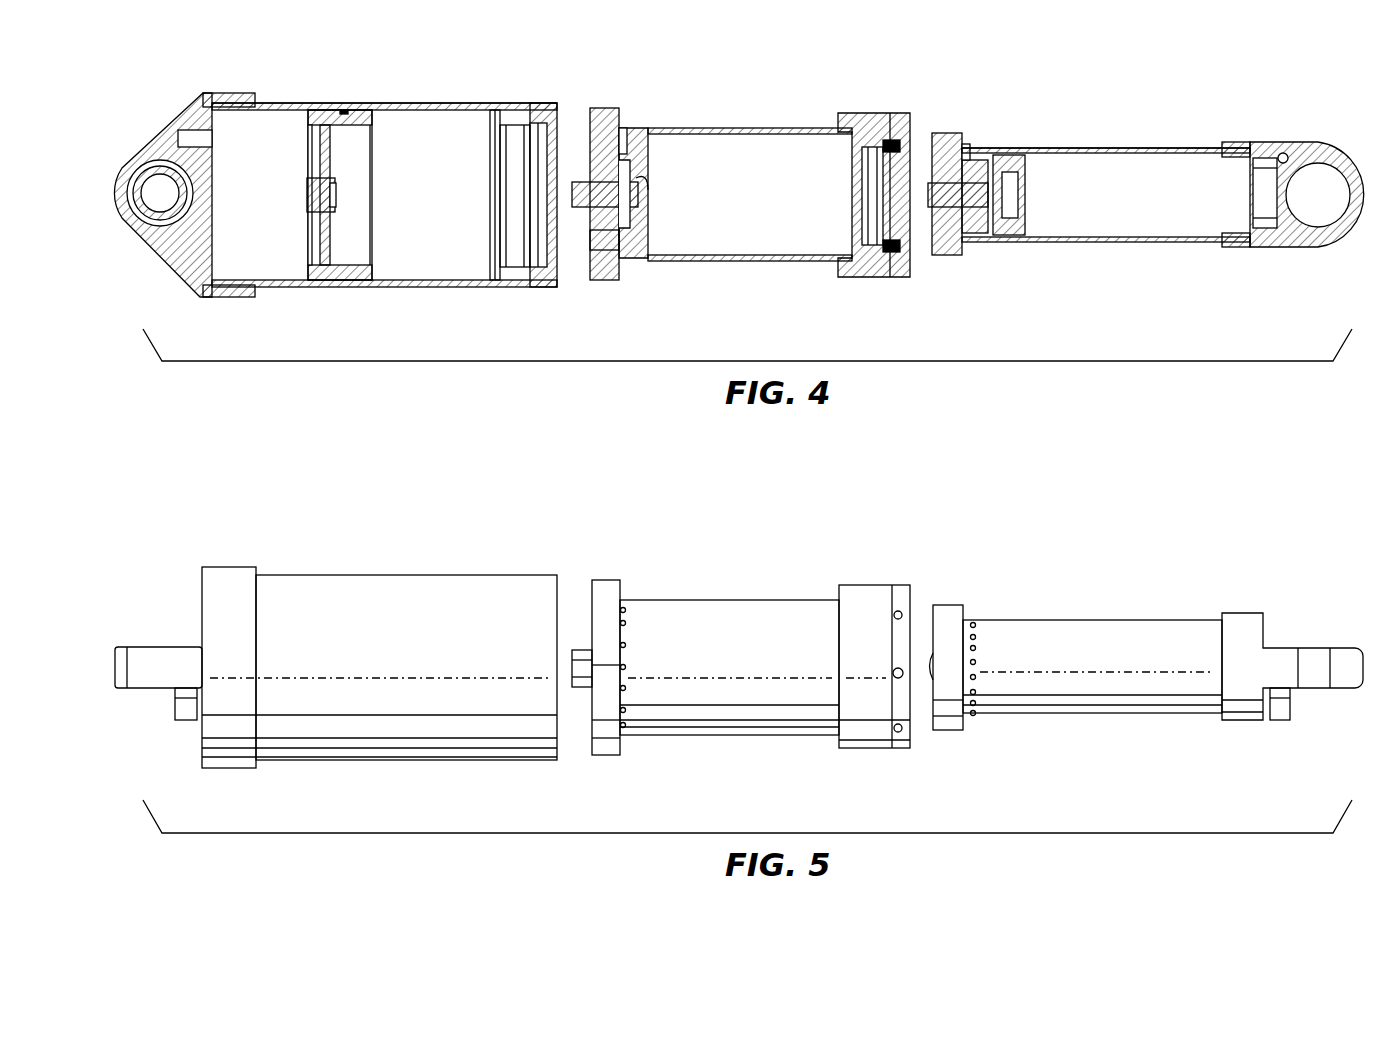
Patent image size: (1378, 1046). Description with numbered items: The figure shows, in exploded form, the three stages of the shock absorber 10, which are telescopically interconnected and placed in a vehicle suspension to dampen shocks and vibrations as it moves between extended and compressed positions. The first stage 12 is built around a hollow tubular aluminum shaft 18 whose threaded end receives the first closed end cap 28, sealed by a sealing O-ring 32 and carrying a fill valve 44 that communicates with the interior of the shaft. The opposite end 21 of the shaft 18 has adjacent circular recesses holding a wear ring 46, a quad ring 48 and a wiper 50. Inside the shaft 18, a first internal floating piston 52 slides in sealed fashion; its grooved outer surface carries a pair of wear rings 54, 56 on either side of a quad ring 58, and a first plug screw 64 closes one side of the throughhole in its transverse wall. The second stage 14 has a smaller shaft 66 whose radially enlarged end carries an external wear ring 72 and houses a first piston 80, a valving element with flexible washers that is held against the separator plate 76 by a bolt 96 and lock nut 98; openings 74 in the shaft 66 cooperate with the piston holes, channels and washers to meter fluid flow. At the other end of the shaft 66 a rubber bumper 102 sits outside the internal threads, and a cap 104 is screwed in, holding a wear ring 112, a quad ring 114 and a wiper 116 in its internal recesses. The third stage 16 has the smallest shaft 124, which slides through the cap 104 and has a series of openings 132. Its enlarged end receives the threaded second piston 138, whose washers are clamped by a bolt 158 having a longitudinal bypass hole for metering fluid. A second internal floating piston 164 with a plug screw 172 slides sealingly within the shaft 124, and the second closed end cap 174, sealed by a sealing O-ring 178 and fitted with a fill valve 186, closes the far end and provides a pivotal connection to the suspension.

In FIG. 4, the shock absorber 10 is at (800, 86).
In FIG. 4, the first stage 12 is at (384, 192).
In FIG. 5, the first stage 12 is at (375, 760).
In FIG. 4, the second stage 14 is at (714, 124).
In FIG. 5, the second stage 14 is at (705, 663).
In FIG. 4, the third stage 16 is at (1106, 194).
In FIG. 5, the third stage 16 is at (1080, 715).
In FIG. 4, the shaft 18 is at (420, 103).
In FIG. 4, the opposite end 21 is at (532, 194).
In FIG. 4, the first closed end cap 28 is at (178, 142).
In FIG. 5, the first closed end cap 28 is at (170, 655).
In FIG. 4, the sealing O-ring 32 is at (212, 100).
In FIG. 5, the fill valve 44 is at (185, 720).
In FIG. 4, the wear ring 46 is at (513, 137).
In FIG. 4, the quad ring 48 is at (540, 120).
In FIG. 4, the wiper 50 is at (545, 120).
In FIG. 4, the first internal floating piston 52 is at (330, 167).
In FIG. 4, the wear ring 54 is at (313, 110).
In FIG. 4, the wear ring 56 is at (362, 110).
In FIG. 4, the quad ring 58 is at (340, 110).
In FIG. 4, the first plug screw 64 is at (307, 194).
In FIG. 4, the shaft 66 is at (745, 128).
In FIG. 4, the wear ring 72 is at (607, 108).
In FIG. 4, the openings 74 is at (622, 136).
In FIG. 5, the openings 74 is at (626, 625).
In FIG. 4, the separator plate 76 is at (640, 232).
In FIG. 4, the first piston 80 is at (604, 240).
In FIG. 4, the bolt 96 is at (640, 178).
In FIG. 4, the lock nut 98 is at (583, 180).
In FIG. 4, the rubber bumper 102 is at (880, 195).
In FIG. 5, the rubber bumper 102 is at (885, 638).
In FIG. 4, the cap 104 is at (905, 130).
In FIG. 5, the cap 104 is at (902, 600).
In FIG. 4, the wear ring 112 is at (865, 258).
In FIG. 4, the quad ring 114 is at (885, 265).
In FIG. 4, the wiper 116 is at (900, 262).
In FIG. 4, the shaft 124 is at (1110, 148).
In FIG. 4, the openings 132 is at (979, 209).
In FIG. 5, the openings 132 is at (976, 650).
In FIG. 4, the second piston 138 is at (962, 150).
In FIG. 4, the bolt 158 is at (932, 208).
In FIG. 4, the second internal floating piston 164 is at (1043, 195).
In FIG. 4, the plug screw 172 is at (1018, 200).
In FIG. 4, the second closed end cap 174 is at (1310, 158).
In FIG. 5, the second closed end cap 174 is at (1258, 652).
In FIG. 4, the sealing O-ring 178 is at (1240, 144).
In FIG. 5, the fill valve 186 is at (1283, 720).